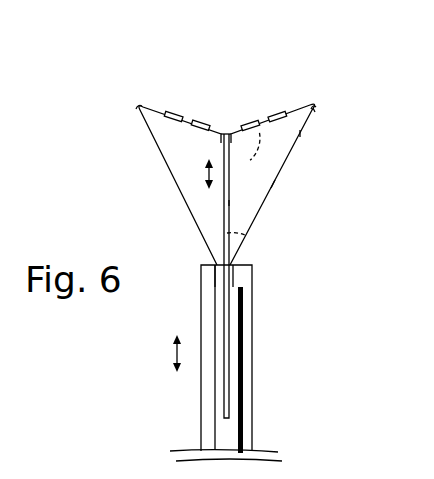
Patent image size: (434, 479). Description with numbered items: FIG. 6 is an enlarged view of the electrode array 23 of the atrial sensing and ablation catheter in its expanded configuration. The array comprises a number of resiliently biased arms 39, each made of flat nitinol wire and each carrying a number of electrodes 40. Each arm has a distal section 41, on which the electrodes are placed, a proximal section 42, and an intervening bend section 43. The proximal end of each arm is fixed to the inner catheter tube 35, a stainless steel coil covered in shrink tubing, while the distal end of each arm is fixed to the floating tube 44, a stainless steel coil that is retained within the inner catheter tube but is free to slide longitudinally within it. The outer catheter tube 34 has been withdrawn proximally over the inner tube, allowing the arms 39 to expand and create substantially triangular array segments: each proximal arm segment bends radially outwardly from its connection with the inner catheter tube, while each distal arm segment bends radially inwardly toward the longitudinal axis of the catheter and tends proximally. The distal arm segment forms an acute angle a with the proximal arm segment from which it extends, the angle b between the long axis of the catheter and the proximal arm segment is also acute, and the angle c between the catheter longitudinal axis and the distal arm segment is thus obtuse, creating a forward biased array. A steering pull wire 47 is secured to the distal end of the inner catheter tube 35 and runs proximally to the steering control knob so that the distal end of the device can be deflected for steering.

The electrode array 23 is at (150, 194).
The outer catheter tube 34 is at (257, 383).
The inner catheter tube 35 is at (215, 432).
The resiliently biased arms 39 is at (282, 182).
The electrodes 40 is at (276, 115).
The distal section 41 is at (160, 103).
The proximal section 42 is at (160, 153).
The bend section 43 is at (322, 103).
The floating tube 44 is at (232, 203).
The steering pull wire 47 is at (240, 435).
The angle a is at (298, 134).
The angle b is at (237, 221).
The angle c is at (231, 168).